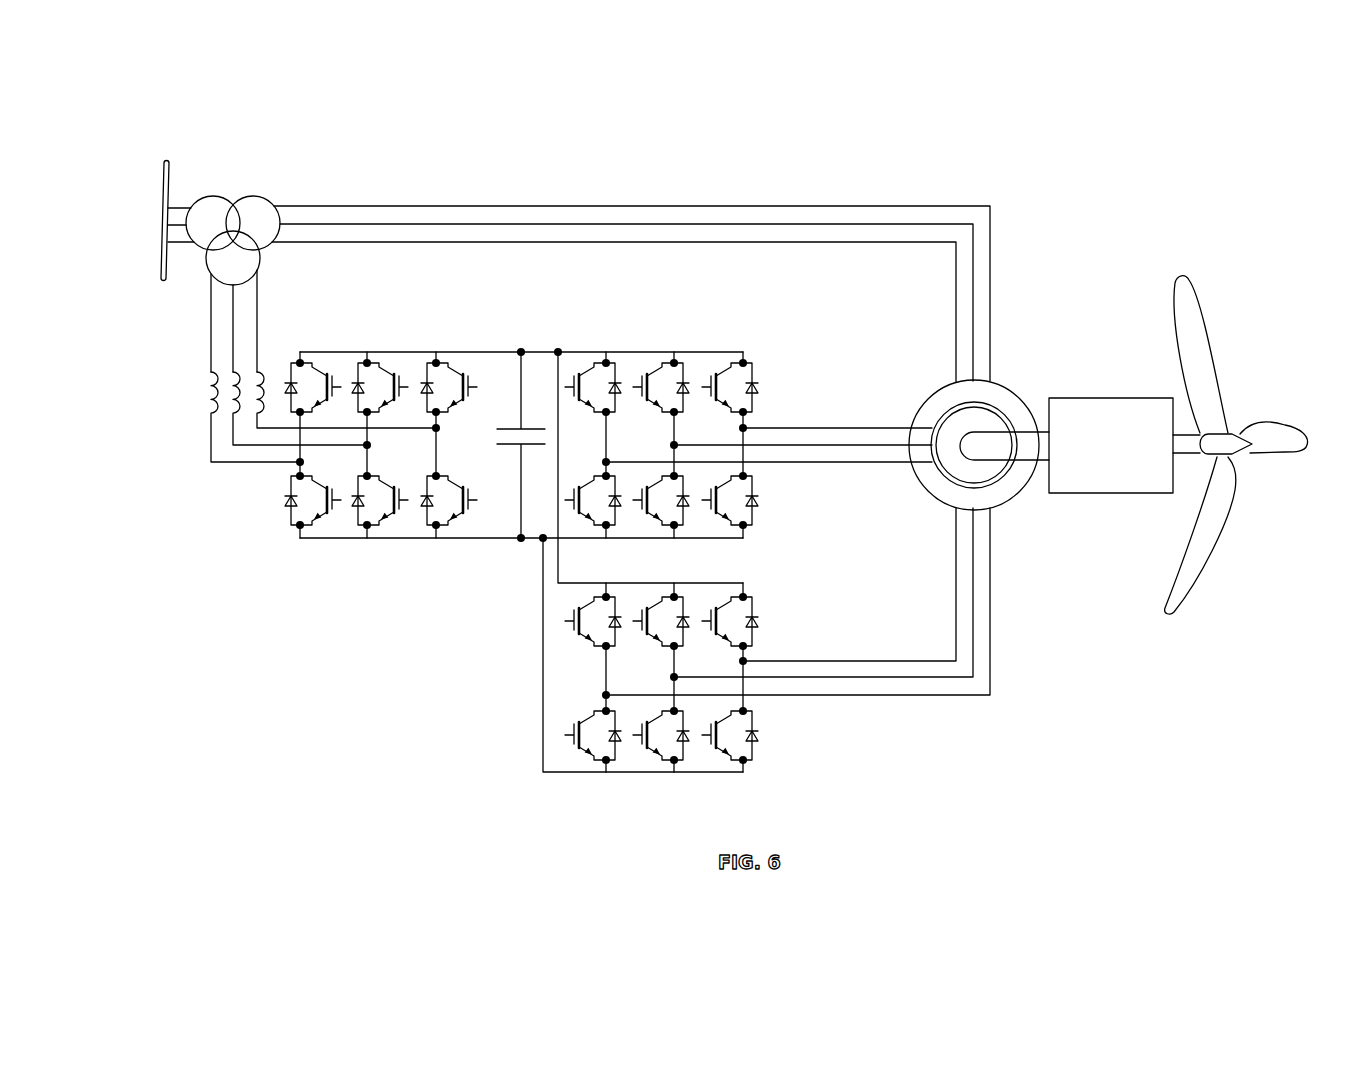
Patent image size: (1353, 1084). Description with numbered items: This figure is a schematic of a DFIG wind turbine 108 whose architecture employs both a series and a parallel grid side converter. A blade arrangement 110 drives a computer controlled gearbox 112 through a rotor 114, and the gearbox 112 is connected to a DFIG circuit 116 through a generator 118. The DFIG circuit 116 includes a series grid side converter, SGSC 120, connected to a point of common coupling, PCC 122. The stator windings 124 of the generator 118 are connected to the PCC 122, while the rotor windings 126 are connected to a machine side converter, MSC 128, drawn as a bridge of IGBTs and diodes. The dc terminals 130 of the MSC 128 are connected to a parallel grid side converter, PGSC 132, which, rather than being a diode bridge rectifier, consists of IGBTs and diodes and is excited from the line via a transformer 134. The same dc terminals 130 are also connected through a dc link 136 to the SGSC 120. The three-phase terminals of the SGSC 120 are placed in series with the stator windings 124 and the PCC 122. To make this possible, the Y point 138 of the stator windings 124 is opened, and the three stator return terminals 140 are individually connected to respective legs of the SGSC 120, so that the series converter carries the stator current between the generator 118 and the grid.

The wind turbine 108 is at (205, 86).
The blade arrangement 110 is at (1253, 472).
The computer controlled gearbox 112 is at (1105, 398).
The rotor 114 is at (1182, 454).
The DFIG circuit 116 is at (1004, 270).
The generator 118 is at (1022, 378).
The series grid side converter (SGSC) 120 is at (751, 568).
The point of common coupling (PCC) 122 is at (160, 163).
The stator windings 124 is at (941, 328).
The rotor windings 126 is at (874, 478).
The MSC 128 is at (754, 330).
The dc terminals 130 is at (606, 350).
The parallel grid side converter (PGSC) 132 is at (386, 560).
The transformer 134 is at (192, 285).
The dc link 136 is at (541, 350).
The Y point 138 is at (1006, 520).
The stator return terminals 140 is at (898, 712).